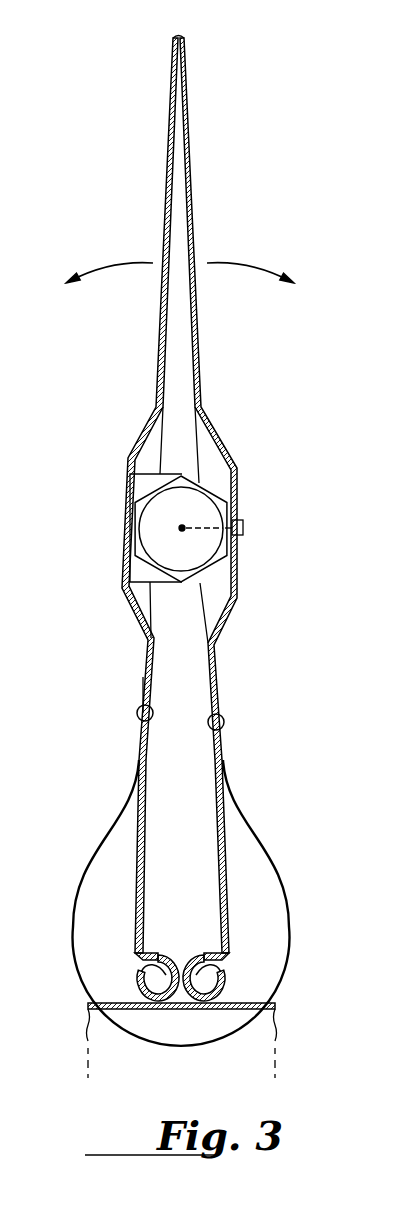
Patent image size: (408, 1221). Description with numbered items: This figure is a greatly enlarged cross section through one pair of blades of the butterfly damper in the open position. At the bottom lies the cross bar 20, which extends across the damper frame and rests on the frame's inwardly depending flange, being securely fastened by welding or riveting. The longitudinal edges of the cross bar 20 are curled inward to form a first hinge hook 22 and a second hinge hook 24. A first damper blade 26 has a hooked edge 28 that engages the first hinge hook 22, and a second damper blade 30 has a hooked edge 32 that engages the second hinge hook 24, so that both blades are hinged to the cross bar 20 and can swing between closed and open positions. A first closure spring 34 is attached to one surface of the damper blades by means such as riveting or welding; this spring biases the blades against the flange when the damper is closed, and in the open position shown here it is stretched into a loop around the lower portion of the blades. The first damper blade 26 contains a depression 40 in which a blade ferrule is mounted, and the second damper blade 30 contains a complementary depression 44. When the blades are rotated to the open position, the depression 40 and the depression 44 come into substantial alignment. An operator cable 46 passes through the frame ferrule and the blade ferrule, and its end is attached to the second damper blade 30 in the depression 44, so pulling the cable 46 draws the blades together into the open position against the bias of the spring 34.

The cross bar 20 is at (187, 1003).
The first hinge hook 22 is at (135, 983).
The second hinge hook 24 is at (227, 984).
The first damper blade 26 is at (165, 187).
The hooked edge 28 is at (162, 985).
The second damper blade 30 is at (192, 185).
The hooked edge 32 is at (197, 985).
The first closure spring 34 is at (268, 858).
The depression 40 is at (130, 468).
The depression 44 is at (237, 480).
The operator cable 46 is at (234, 547).